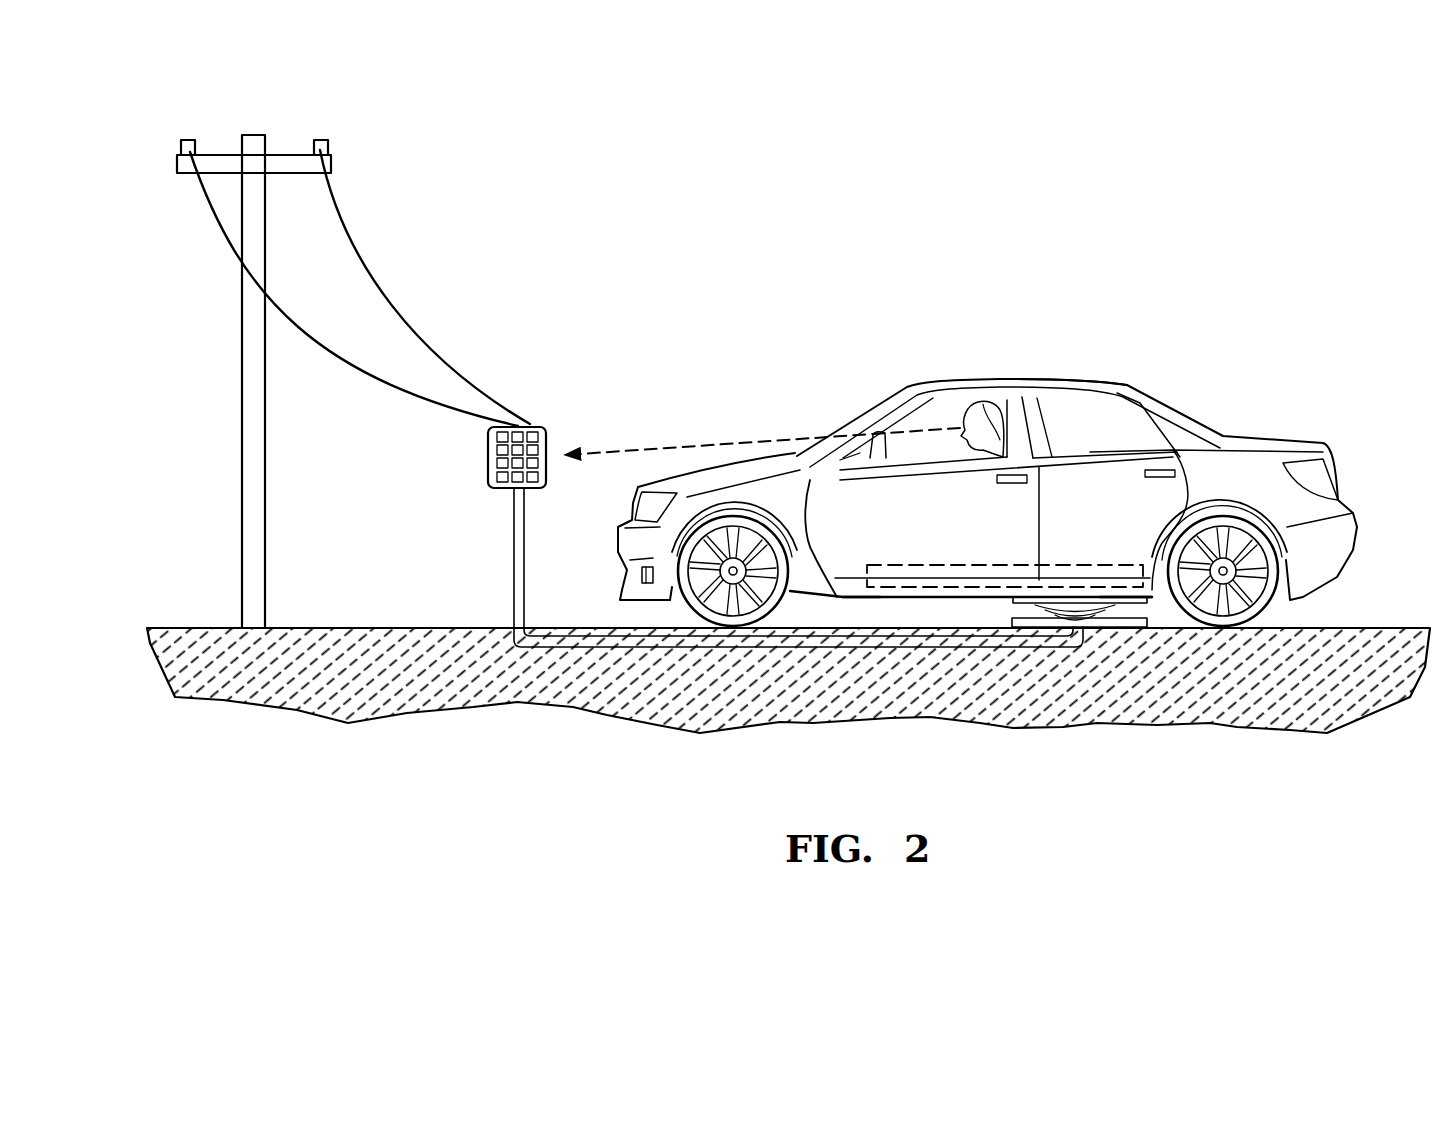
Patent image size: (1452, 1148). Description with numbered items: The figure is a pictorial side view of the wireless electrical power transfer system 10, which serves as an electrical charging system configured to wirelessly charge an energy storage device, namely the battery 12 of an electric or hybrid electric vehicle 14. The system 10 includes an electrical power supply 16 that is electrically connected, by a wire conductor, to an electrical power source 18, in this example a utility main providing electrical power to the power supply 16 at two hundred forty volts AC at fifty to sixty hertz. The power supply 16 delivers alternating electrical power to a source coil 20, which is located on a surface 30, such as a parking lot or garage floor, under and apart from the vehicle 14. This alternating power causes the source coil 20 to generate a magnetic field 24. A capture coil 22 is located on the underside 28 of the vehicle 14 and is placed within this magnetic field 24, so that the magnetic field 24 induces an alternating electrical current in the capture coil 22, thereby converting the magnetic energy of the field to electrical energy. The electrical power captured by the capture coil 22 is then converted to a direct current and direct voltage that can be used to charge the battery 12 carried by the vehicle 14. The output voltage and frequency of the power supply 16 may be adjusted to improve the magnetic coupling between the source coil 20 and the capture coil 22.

The wireless electrical power transfer system 10 is at (987, 503).
The battery 12 is at (1118, 565).
The vehicle 14 is at (1153, 393).
The electrical power supply 16 is at (545, 446).
The electrical power source 18 is at (385, 310).
The source coil 20 is at (1028, 626).
The capture coil 22 is at (1150, 598).
The magnetic field 24 is at (1095, 610).
The underside 28 is at (835, 598).
The surface 30 is at (1397, 628).